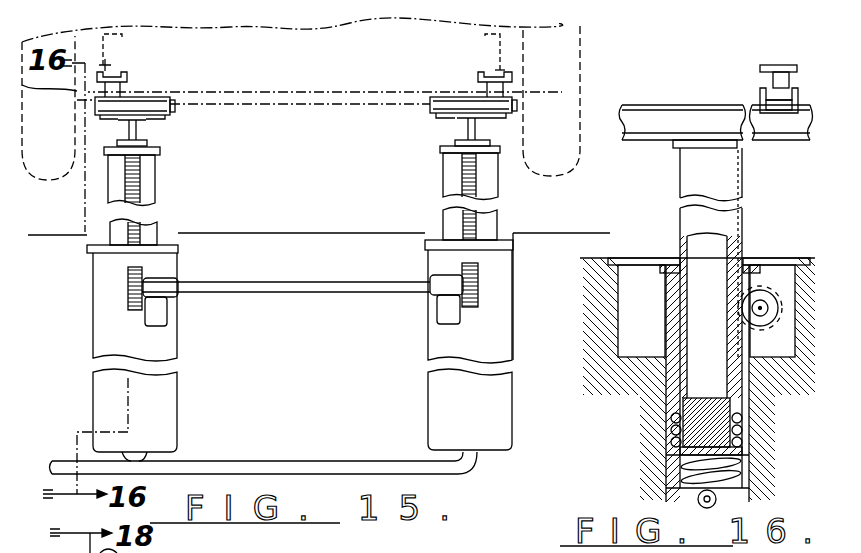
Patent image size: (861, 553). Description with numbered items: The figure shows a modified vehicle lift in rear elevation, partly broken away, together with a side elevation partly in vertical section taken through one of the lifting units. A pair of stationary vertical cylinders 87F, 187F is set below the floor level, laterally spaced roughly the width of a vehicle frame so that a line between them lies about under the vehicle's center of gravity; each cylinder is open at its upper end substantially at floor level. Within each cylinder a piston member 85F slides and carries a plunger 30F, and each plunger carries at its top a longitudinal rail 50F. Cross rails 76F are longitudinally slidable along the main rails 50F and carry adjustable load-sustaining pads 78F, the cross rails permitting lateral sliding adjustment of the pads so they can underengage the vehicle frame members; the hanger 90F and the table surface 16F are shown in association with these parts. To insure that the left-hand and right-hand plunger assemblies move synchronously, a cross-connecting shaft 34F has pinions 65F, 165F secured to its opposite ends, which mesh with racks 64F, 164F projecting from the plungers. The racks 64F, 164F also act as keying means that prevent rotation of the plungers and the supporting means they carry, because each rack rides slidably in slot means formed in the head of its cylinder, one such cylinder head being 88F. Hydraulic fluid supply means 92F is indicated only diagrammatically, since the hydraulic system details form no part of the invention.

In FIG. 15, the adjustable pad 78F is at (127, 80).
In FIG. 16, the adjustable pad 78F is at (779, 65).
In FIG. 15, the cross rail 76F is at (170, 108).
In FIG. 16, the cross rail 76F is at (762, 92).
In FIG. 15, the longitudinal rail 50F is at (140, 138).
In FIG. 16, the longitudinal rail 50F is at (680, 105).
In FIG. 15, the plunger 30F is at (152, 166).
In FIG. 16, the plunger 30F is at (690, 168).
In FIG. 15, the rack 64F is at (158, 184).
In FIG. 16, the rack 64F is at (743, 190).
In FIG. 15, the cylinder head 88F is at (168, 245).
In FIG. 15, the pinion 65F is at (128, 272).
In FIG. 16, the pinion 65F is at (763, 288).
In FIG. 15, the stationary vertical cylinder 87F is at (100, 334).
In FIG. 15, the cross-connecting shaft 34F is at (315, 262).
In FIG. 15, the pinion 165F is at (479, 280).
In FIG. 15, the stationary vertical cylinder 187F is at (438, 344).
In FIG. 15, the rack 164F is at (462, 170).
In FIG. 15, the hanger 90F is at (500, 53).
In FIG. 15, the hydraulic fluid supply means 92F is at (288, 462).
In FIG. 15, the table 16F is at (588, 215).
In FIG. 16, the piston member 85F is at (683, 410).